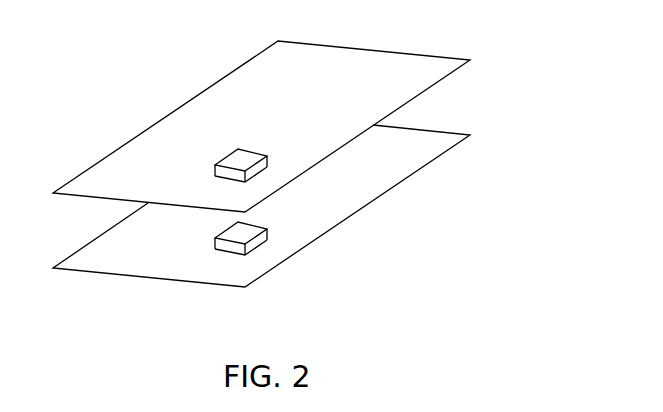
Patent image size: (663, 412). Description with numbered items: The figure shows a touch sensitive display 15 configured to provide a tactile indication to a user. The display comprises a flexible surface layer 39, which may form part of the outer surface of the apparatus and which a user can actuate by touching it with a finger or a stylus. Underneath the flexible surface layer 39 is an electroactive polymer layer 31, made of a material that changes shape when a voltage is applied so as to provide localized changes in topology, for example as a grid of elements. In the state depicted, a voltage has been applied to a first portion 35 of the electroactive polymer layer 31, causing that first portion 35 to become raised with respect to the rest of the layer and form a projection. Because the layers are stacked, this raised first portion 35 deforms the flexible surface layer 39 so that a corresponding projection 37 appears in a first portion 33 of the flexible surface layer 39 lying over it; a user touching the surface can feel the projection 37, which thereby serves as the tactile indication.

The touch sensitive display 15 is at (294, 175).
The flexible surface layer 39 is at (422, 74).
The electroactive polymer layer 31 is at (387, 163).
The first portion of the flexible surface layer 33 is at (257, 241).
The first portion of the EAP layer 35 is at (265, 242).
The projection 37 is at (227, 180).